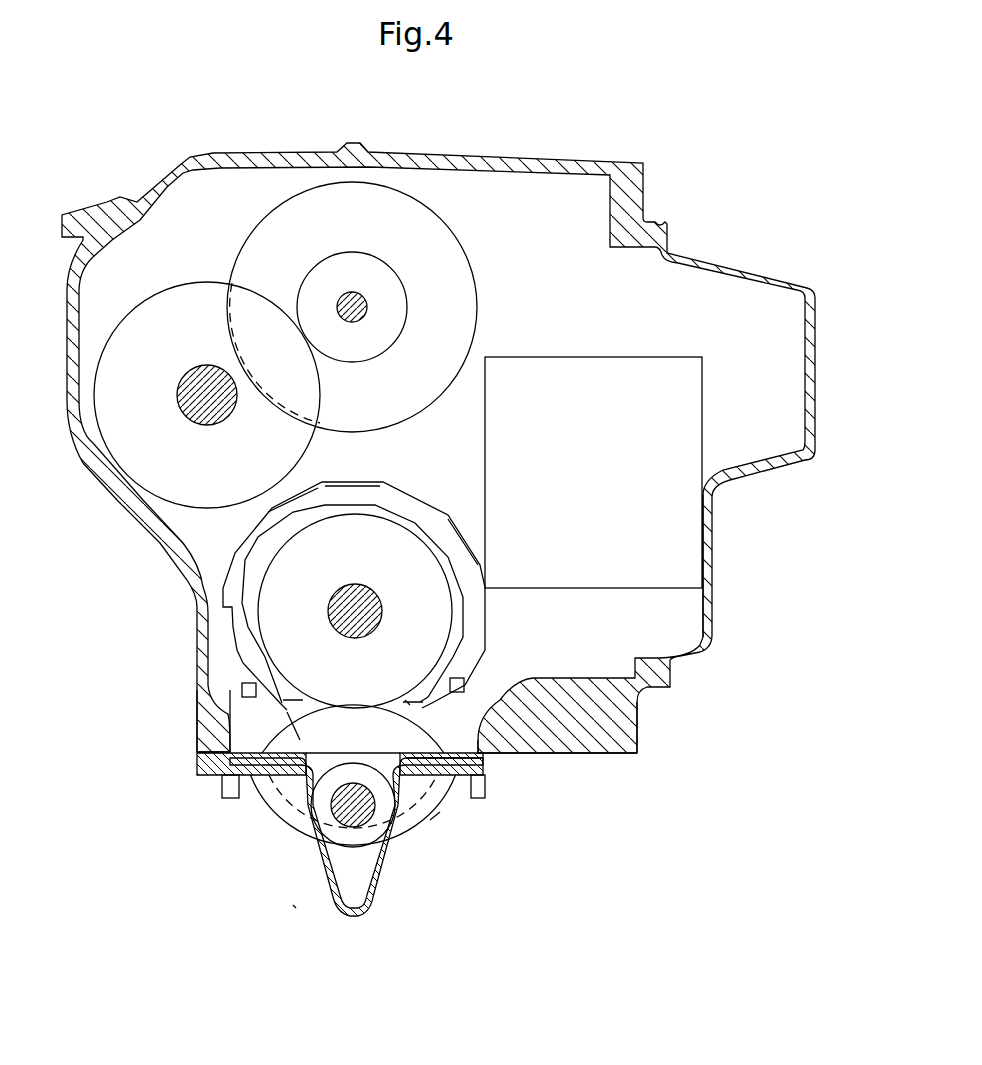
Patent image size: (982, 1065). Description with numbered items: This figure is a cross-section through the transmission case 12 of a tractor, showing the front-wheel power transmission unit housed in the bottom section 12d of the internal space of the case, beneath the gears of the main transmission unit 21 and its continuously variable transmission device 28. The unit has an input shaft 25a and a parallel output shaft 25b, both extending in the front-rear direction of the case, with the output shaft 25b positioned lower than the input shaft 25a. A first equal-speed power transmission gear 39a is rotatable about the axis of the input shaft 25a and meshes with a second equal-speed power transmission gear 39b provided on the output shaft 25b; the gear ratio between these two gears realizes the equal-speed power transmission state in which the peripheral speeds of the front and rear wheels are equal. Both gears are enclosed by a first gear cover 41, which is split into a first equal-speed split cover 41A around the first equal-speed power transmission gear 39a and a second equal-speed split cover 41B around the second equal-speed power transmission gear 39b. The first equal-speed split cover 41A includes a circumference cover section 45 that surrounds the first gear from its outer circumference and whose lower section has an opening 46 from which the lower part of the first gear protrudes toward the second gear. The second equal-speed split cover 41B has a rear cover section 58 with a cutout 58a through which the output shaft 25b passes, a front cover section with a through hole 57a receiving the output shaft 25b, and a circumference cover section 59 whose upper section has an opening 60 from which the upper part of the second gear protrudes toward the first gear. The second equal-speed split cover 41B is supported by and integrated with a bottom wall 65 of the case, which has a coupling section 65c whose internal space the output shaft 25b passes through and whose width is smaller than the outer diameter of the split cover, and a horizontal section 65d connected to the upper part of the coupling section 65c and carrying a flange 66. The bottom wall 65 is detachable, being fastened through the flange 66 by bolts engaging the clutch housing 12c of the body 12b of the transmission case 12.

The transmission case 12 is at (192, 120).
The body 12b is at (356, 770).
The clutch housing 12c is at (195, 722).
The bottom section 12d is at (540, 620).
The main transmission unit 21 is at (500, 235).
The continuously variable transmission device 28 is at (592, 365).
The first gear cover 41 is at (408, 678).
The first equal-speed split cover 41A is at (393, 505).
The second equal-speed split cover 41B is at (450, 877).
The circumference cover section 45 is at (447, 565).
The input shaft 25a is at (353, 588).
The output shaft 25b is at (352, 828).
The first equal-speed power transmission gear 39a is at (316, 596).
The second equal-speed power transmission gear 39b is at (280, 867).
The opening 46 is at (408, 702).
The through hole 57a is at (320, 805).
The rear cover section 58 is at (430, 820).
The cutout 58a is at (437, 773).
The circumference cover section 59 is at (293, 905).
The opening 60 is at (300, 752).
The bottom wall 65 is at (344, 883).
The coupling section 65c is at (387, 883).
The horizontal section 65d is at (230, 787).
The flange 66 is at (195, 770).